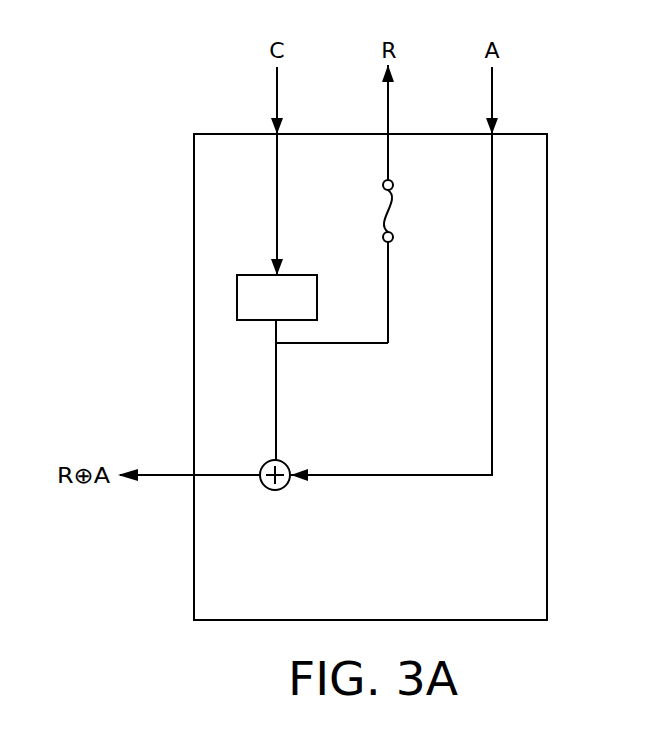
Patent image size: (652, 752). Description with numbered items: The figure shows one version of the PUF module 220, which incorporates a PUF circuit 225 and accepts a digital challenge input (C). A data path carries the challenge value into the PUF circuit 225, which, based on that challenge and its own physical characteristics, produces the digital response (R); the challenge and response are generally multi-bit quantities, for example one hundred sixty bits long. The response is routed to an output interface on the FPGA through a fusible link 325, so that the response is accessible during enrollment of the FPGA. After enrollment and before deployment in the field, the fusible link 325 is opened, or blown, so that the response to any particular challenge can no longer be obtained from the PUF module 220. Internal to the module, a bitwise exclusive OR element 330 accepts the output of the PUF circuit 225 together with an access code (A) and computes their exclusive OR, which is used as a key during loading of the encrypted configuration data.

The PUF module 220 is at (548, 190).
The PUF circuit 225 is at (317, 298).
The fusible link 325 is at (395, 202).
The bitwise exclusive OR element 330 is at (270, 490).